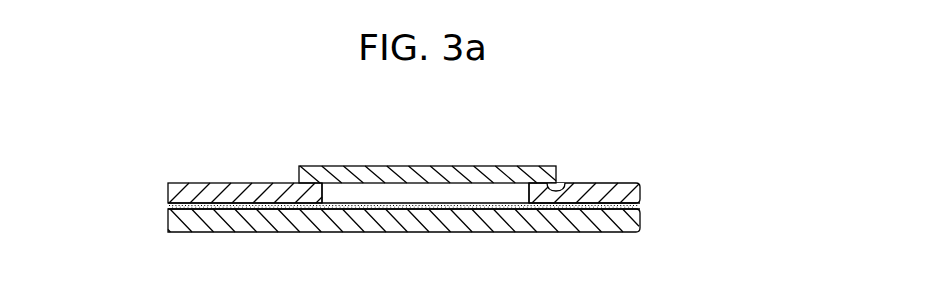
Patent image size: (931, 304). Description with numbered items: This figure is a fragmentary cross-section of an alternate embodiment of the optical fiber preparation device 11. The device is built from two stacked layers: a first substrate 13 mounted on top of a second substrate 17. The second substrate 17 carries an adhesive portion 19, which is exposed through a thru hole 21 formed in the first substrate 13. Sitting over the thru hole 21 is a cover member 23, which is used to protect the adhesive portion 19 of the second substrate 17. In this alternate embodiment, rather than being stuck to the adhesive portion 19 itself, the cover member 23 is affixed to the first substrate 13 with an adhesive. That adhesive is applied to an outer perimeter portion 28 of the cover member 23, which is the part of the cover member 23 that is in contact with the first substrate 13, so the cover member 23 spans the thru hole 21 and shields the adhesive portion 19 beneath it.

The optical fiber preparation device 11 is at (157, 169).
The first substrate 13 is at (642, 197).
The second substrate 17 is at (638, 221).
The adhesive portion 19 is at (640, 206).
The thru hole 21 is at (323, 189).
The cover member 23 is at (420, 156).
The outer perimeter portion 28 is at (557, 186).